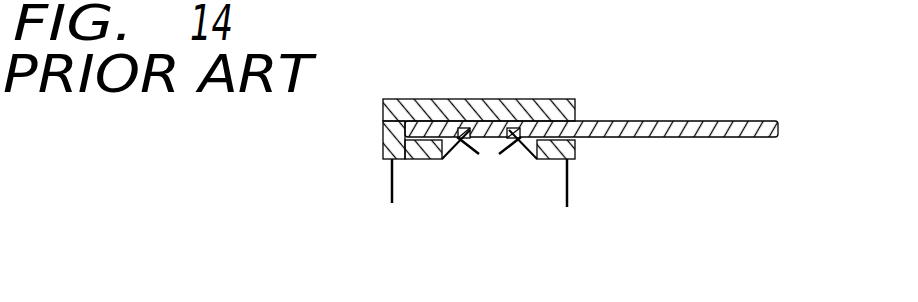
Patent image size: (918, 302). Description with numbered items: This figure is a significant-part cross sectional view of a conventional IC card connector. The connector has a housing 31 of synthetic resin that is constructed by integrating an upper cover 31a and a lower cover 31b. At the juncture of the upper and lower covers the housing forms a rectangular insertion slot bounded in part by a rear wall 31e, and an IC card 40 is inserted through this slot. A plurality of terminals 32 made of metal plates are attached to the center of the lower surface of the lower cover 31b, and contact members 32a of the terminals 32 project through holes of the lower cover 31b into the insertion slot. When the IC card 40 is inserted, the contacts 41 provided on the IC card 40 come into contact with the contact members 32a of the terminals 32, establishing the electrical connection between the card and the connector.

The housing 31 is at (426, 143).
The upper cover 31a is at (461, 100).
The lower cover 31b is at (547, 152).
The rear wall 31e is at (383, 133).
The terminal 32 is at (395, 185).
The contact member 32a is at (517, 150).
The IC card 40 is at (780, 128).
The contact 41 is at (470, 127).